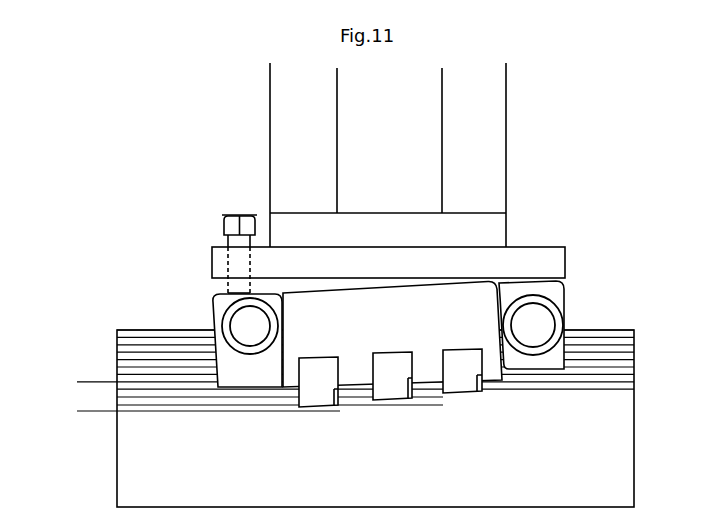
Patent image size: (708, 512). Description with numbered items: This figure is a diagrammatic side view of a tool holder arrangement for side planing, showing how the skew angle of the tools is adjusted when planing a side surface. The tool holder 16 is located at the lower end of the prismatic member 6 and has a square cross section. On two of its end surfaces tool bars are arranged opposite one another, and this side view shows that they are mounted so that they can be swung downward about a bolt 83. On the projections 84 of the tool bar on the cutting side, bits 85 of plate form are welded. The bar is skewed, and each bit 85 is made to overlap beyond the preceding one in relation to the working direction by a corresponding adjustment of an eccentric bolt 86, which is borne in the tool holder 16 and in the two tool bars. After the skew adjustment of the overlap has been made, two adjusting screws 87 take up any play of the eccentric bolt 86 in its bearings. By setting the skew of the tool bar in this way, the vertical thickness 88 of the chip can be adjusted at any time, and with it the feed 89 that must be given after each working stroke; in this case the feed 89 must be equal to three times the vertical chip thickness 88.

The prismatic member 6 is at (485, 106).
The tool holder 16 is at (518, 258).
The bolt 83 is at (535, 328).
The projections 84 is at (470, 378).
The bits 85 is at (312, 401).
The eccentric bolt 86 is at (252, 332).
The adjusting screws 87 is at (227, 217).
The vertical thickness of the chip 88 is at (137, 376).
The feed 89 is at (85, 350).